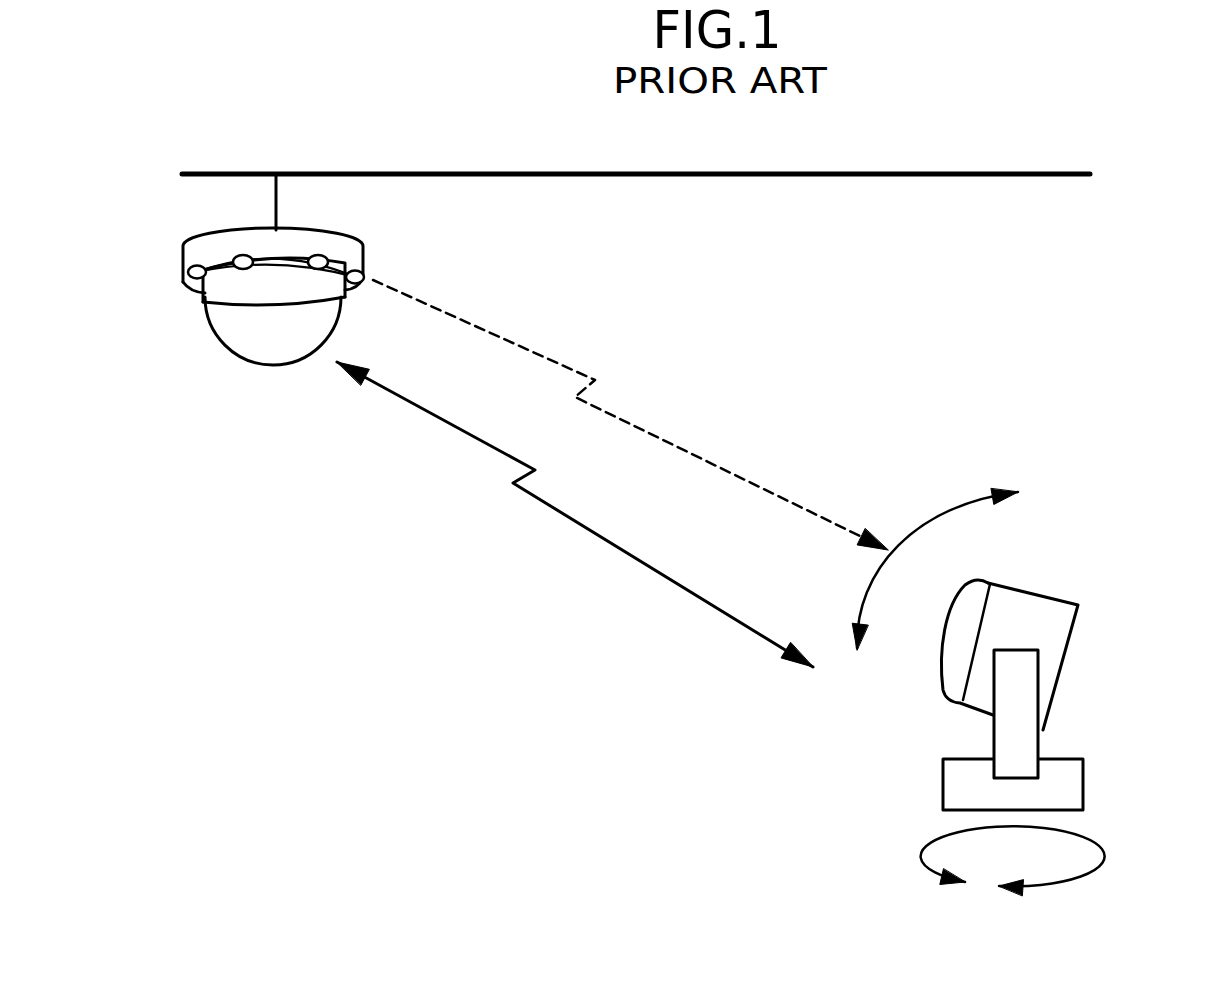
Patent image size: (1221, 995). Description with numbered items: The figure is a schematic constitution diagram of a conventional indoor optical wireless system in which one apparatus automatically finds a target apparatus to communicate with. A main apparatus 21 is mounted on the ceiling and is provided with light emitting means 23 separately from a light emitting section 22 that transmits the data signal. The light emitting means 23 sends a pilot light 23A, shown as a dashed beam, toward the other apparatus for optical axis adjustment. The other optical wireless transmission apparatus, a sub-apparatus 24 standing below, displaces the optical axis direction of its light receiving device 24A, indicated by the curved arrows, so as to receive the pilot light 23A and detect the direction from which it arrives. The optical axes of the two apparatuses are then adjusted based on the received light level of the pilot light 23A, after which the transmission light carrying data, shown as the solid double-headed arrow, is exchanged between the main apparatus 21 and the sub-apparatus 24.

The main apparatus 21 is at (301, 242).
The light emitting section 22 is at (258, 353).
The light emitting means 23 is at (328, 246).
The pilot light 23A is at (558, 362).
The sub-apparatus 24 is at (1083, 777).
The light receiving device 24A is at (950, 675).